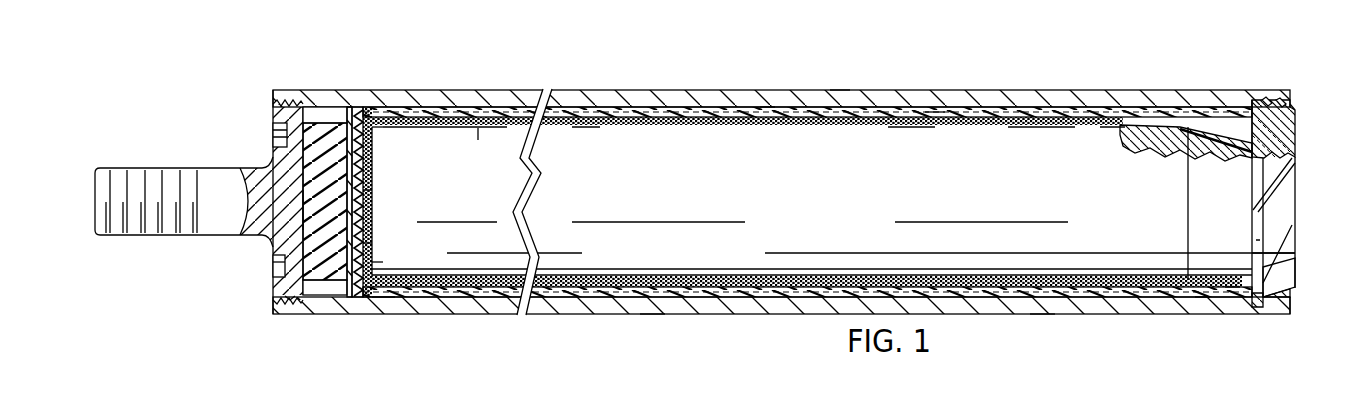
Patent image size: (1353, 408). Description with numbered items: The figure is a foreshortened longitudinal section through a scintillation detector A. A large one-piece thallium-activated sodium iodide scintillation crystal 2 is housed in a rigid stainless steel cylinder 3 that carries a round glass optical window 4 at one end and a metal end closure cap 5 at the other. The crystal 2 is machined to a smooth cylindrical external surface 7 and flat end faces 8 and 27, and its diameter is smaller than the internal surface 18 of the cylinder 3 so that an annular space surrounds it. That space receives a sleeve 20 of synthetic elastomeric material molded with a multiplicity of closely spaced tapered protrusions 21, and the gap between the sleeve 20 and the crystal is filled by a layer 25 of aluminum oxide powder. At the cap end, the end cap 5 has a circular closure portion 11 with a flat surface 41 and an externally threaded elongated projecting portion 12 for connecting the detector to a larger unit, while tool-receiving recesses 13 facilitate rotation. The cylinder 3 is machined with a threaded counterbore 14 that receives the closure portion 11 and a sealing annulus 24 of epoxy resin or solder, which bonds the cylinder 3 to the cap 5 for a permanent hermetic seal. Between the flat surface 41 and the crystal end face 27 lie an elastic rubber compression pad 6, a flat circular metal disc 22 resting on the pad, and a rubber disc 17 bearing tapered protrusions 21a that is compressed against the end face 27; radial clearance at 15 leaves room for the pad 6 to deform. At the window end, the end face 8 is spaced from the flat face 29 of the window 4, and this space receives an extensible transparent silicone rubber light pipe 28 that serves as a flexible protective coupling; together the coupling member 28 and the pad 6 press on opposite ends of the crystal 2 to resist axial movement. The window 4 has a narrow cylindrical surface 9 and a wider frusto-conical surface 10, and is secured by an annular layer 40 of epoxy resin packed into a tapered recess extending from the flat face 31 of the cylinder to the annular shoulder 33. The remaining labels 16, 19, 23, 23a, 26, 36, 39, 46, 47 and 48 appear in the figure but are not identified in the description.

The scintillation crystal 2 is at (478, 147).
The cylinder 3 is at (667, 95).
The optical window 4 is at (1298, 210).
The end closure cap 5 is at (213, 240).
The compression pad 6 is at (323, 265).
The cylindrical external surface 7 is at (767, 110).
The flat end face 8 is at (1188, 217).
The cylindrical surface 9 is at (1260, 252).
The frusto-conical surface 10 is at (1283, 273).
The closure portion 11 is at (283, 158).
The projecting portion 12 is at (127, 178).
The tool-receiving recesses 13 is at (275, 137).
The threaded counterbore 14 is at (295, 298).
The radial clearance 15 is at (318, 110).
The inner disc 16 is at (349, 298).
The elastic rubber disc 17 is at (367, 170).
The internal surface 18 is at (933, 112).
The bottom wall 19 is at (652, 314).
The sleeve 20 is at (1043, 290).
The protrusions 21 is at (733, 278).
The tapered protrusions 21a is at (367, 195).
The metal disc 22 is at (360, 296).
The inner layer 23 is at (923, 280).
The end inner layer 23a is at (370, 260).
The sealing annulus 24 is at (273, 108).
The layer of aluminum oxide powder 25 is at (615, 127).
The end granular layer 26 is at (365, 243).
The flat end face 27 is at (367, 147).
The light pipe 28 is at (1217, 128).
The flat face 29 is at (1232, 288).
The flat face 31 is at (1292, 312).
The annular shoulder 33 is at (1247, 102).
The bottom seal 36 is at (1257, 298).
The end block 39 is at (1296, 145).
The annular layer 40 is at (1290, 108).
The flat surface 41 is at (310, 210).
The liner bottom end 46 is at (382, 297).
The disc top 47 is at (347, 108).
The liner end portion 48 is at (1202, 290).
The scintillation detector A is at (835, 63).